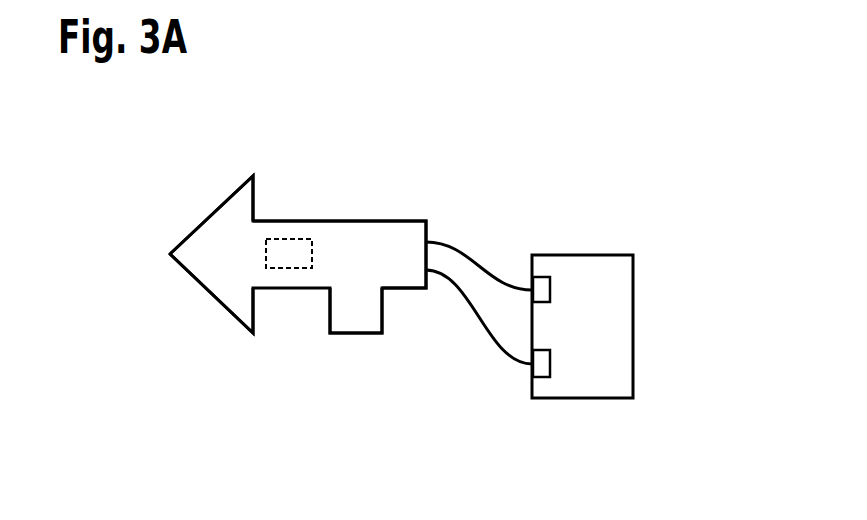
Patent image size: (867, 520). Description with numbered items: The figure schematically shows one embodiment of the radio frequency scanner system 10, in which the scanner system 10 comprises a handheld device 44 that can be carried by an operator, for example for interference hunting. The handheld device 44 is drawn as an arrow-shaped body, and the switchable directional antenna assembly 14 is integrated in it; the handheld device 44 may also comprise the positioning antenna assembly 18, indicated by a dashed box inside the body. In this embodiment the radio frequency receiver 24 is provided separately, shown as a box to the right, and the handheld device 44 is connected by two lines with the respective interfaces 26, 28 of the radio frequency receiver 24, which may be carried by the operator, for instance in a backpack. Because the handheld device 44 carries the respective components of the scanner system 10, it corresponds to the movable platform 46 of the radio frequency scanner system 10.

The radio frequency scanner system 10 is at (341, 170).
The switchable directional antenna assembly 14 is at (190, 219).
The movable platform 46 is at (405, 193).
The handheld device 44 is at (398, 292).
The positioning antenna assembly 18 is at (288, 268).
The radio frequency receiver 24 is at (633, 306).
The interface 28 is at (546, 272).
The interface 26 is at (545, 384).